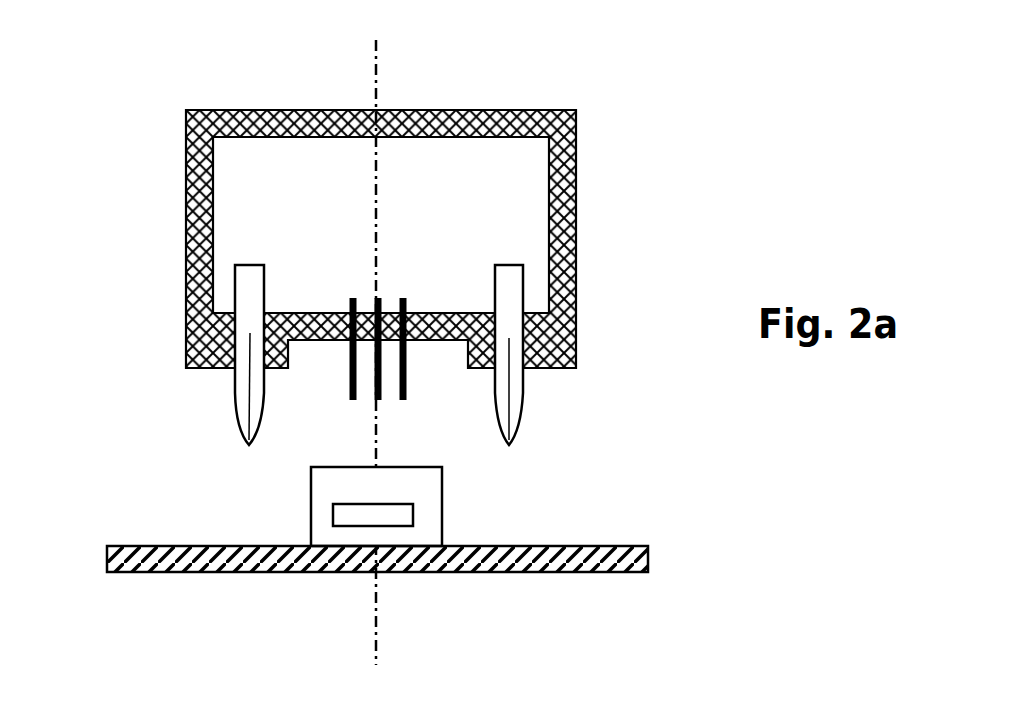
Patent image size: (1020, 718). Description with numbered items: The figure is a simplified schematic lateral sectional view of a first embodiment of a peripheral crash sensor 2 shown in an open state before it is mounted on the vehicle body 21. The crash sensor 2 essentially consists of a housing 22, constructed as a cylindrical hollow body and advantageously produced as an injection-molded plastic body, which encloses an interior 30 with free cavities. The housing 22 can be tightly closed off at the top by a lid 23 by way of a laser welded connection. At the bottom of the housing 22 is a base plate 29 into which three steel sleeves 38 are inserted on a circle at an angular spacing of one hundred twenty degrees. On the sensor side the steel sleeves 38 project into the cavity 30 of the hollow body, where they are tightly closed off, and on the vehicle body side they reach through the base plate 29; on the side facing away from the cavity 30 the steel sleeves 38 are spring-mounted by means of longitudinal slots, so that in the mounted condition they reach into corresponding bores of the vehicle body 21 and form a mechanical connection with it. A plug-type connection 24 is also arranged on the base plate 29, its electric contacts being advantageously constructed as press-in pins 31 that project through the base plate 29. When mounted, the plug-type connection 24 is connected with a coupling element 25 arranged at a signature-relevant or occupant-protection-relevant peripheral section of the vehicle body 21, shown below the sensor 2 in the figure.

The crash sensor 2 is at (153, 105).
The vehicle body 21 is at (572, 546).
The housing 22 is at (575, 202).
The lid 23 is at (535, 110).
The plug-type connection 24 is at (363, 288).
The coupling element 25 is at (442, 494).
The base plate 29 is at (445, 315).
The interior 30 is at (415, 167).
The press-in pins 31 is at (409, 305).
The steel sleeves 38 is at (235, 288).